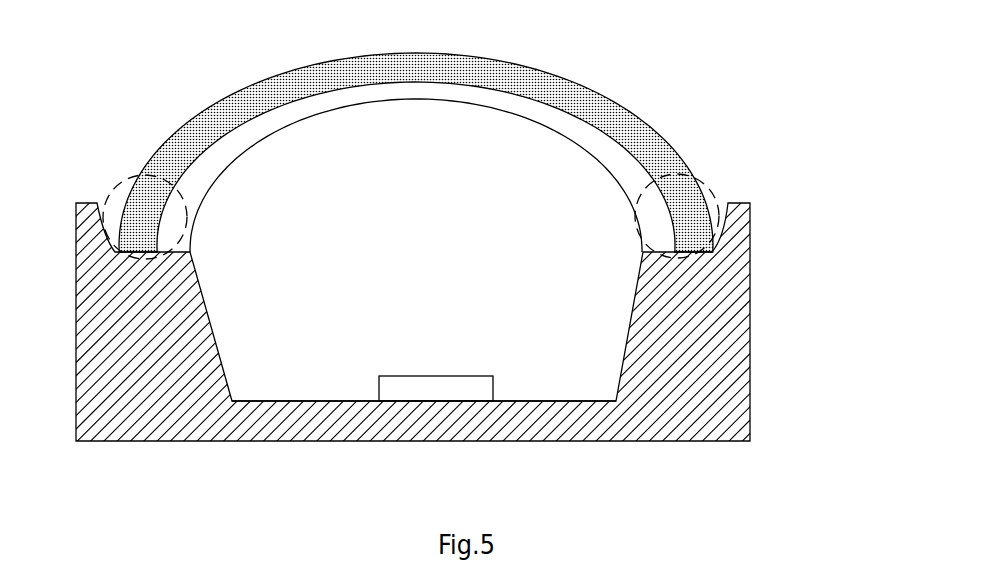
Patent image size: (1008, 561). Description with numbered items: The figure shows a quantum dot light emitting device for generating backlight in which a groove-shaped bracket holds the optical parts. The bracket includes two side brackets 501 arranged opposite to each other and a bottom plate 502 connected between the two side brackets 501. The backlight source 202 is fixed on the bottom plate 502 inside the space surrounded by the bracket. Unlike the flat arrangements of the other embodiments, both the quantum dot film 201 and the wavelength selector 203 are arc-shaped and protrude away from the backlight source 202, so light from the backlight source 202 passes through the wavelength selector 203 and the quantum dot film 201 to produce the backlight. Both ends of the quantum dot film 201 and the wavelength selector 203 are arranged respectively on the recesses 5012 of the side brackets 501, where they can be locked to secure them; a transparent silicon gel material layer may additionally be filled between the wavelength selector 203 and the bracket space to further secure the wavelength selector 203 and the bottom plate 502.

The side bracket 501 is at (731, 350).
The bottom plate 502 is at (408, 418).
The recess 5012 is at (138, 177).
The quantum dot film 201 is at (668, 151).
The backlight source 202 is at (482, 391).
The wavelength selector 203 is at (538, 108).